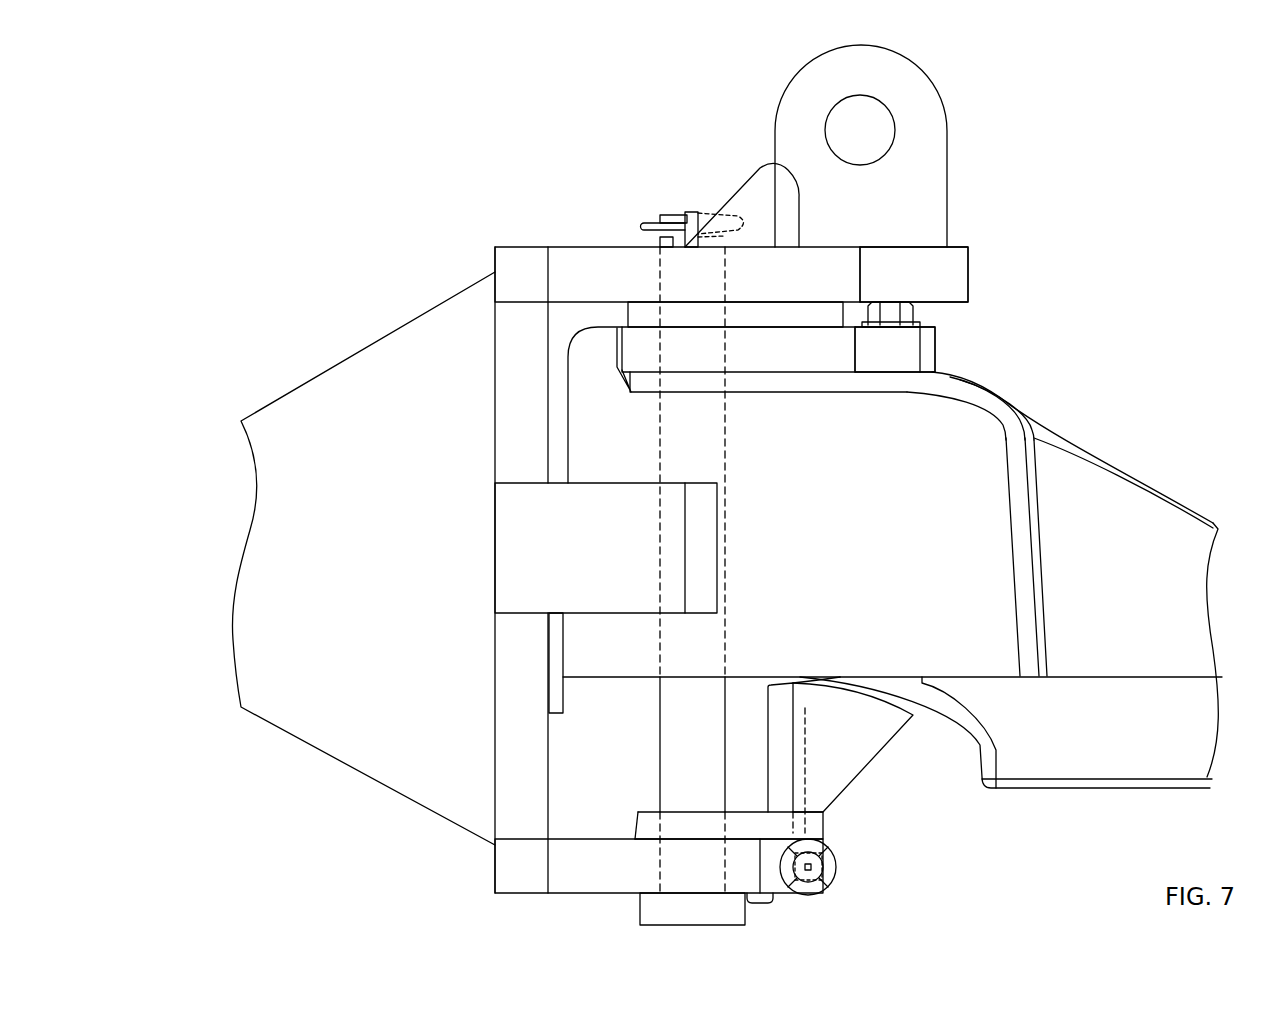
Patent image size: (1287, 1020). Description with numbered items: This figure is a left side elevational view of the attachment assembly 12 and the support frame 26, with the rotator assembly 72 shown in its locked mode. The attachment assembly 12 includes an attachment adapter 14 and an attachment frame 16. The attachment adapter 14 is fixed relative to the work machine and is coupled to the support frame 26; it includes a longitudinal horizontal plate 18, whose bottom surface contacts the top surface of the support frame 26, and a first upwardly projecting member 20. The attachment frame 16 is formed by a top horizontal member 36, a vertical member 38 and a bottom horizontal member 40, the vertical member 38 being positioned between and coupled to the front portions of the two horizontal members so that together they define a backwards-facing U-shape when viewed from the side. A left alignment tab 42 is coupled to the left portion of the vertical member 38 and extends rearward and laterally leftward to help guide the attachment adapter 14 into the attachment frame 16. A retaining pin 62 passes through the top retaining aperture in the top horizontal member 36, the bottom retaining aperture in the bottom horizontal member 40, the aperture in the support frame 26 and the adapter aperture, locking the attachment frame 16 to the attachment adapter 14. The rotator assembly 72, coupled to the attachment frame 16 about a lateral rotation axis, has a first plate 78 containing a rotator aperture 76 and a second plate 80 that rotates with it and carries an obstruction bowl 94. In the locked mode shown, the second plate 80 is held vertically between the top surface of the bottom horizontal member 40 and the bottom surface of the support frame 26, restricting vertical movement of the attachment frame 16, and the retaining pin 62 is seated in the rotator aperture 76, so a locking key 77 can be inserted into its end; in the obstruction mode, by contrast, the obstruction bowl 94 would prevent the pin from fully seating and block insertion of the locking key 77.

The attachment assembly 12 is at (1093, 275).
The attachment adapter 14 is at (948, 352).
The attachment frame 16 is at (522, 202).
The longitudinal horizontal plate 18 is at (935, 337).
The first upwardly projecting member 20 is at (733, 188).
The support frame 26 is at (1025, 803).
The top horizontal member 36 is at (968, 260).
The vertical member 38 is at (495, 875).
The bottom horizontal member 40 is at (572, 893).
The left alignment tab 42 is at (595, 483).
The retaining pin 62 is at (660, 243).
The rotator assembly 72 is at (847, 882).
The rotator aperture 76 is at (658, 812).
The locking key 77 is at (660, 223).
The first plate 78 is at (637, 827).
The second plate 80 is at (767, 762).
The obstruction bowl 94 is at (880, 753).